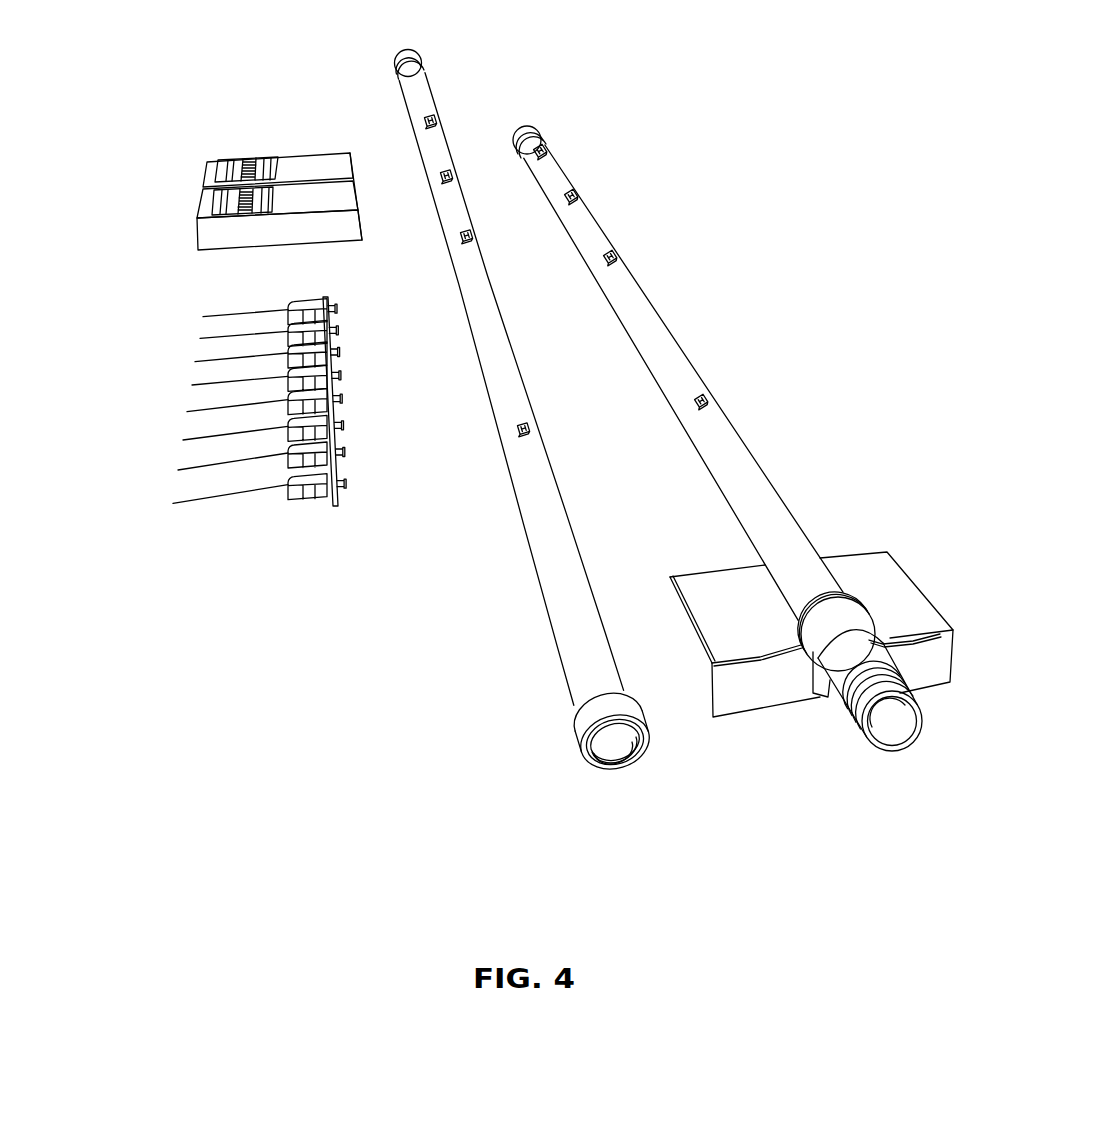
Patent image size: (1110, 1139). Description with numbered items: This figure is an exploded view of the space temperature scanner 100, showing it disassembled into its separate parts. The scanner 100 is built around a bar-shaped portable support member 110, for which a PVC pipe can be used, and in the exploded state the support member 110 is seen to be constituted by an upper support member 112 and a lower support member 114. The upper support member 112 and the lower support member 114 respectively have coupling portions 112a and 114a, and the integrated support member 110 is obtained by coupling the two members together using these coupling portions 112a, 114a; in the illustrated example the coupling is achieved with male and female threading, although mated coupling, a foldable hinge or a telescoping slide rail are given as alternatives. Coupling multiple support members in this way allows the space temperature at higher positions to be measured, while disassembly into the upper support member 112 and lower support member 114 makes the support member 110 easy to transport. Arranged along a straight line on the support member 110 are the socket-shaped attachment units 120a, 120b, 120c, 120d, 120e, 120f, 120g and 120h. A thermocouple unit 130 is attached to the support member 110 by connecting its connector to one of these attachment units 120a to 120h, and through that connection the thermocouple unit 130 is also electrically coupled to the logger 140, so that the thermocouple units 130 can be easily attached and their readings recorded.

The space temperature scanner 100 is at (300, 698).
The support member 110 is at (768, 824).
The upper support member 112 is at (780, 514).
The coupling portion 112a is at (855, 726).
The lower support member 114 is at (567, 658).
The coupling portion 114a is at (617, 760).
The attachment unit 120a is at (548, 152).
The attachment unit 120b is at (579, 198).
The attachment unit 120c is at (619, 258).
The attachment unit 120d is at (711, 401).
The attachment unit 120e is at (532, 428).
The attachment unit 120f is at (474, 238).
The attachment unit 120g is at (453, 182).
The attachment unit 120h is at (439, 118).
The thermocouple unit 130 is at (289, 506).
The logger 140 is at (307, 161).